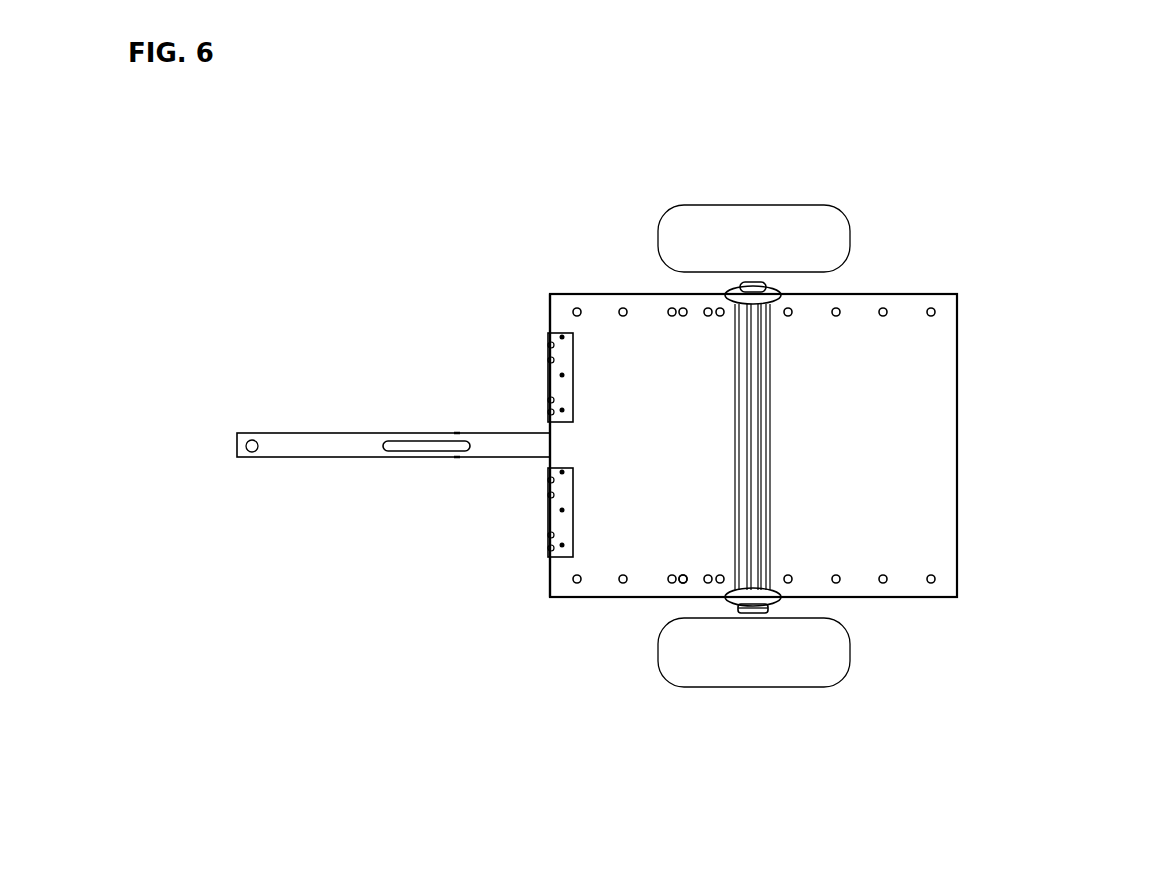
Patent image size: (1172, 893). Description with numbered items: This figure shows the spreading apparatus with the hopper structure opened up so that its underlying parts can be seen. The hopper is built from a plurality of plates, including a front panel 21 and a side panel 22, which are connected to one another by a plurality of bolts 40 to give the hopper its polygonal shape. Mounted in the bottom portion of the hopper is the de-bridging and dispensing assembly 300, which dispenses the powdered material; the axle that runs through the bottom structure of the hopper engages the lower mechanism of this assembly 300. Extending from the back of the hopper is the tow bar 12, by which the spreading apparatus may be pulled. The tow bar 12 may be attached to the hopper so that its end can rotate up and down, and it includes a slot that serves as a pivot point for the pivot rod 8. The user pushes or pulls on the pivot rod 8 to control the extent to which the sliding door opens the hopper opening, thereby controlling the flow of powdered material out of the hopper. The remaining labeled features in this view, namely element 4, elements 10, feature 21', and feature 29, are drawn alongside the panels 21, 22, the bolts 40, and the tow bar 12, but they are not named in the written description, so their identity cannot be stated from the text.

The wheel 4 is at (766, 686).
The pivot rod 8 is at (385, 444).
The mounting bracket 10 is at (467, 432).
The tow bar 12 is at (258, 432).
The front panel 21 is at (849, 445).
The frame front edge 21' is at (471, 459).
The side panel 22 is at (701, 159).
The bracket fastener 29 is at (416, 457).
The bolts 40 is at (878, 544).
The de-bridging and dispensing assembly 300 is at (696, 334).